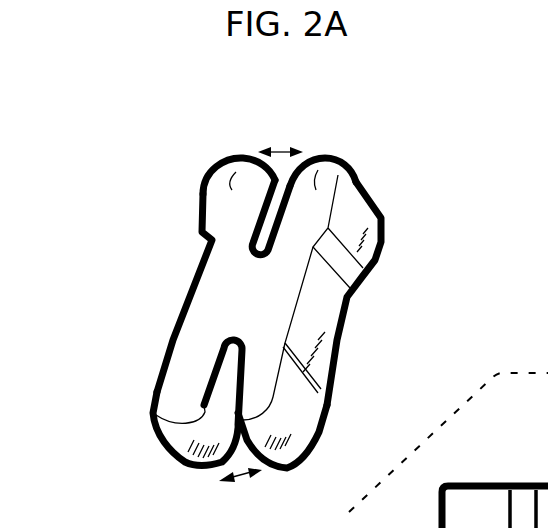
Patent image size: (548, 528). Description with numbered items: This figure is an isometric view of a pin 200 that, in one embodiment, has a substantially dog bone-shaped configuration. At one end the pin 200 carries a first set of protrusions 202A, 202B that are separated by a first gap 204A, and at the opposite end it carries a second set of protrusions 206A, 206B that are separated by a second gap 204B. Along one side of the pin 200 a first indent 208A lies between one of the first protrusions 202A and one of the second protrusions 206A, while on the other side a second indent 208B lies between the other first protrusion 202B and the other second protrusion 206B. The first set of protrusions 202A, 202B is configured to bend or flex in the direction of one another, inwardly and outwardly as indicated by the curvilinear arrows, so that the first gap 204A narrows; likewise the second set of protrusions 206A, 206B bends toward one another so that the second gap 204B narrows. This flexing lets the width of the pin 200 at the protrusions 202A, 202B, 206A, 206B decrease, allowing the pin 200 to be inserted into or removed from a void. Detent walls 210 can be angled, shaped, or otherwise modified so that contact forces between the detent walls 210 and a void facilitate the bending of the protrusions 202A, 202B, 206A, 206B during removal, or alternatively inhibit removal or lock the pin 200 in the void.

The pin 200 is at (373, 205).
The first protrusion 202A is at (224, 160).
The first protrusion 202B is at (325, 157).
The first gap 204A is at (259, 227).
The second gap 204B is at (213, 370).
The second protrusion 206A is at (173, 402).
The second protrusion 206B is at (254, 397).
The first indent 208A is at (170, 284).
The second indent 208B is at (312, 303).
The detent walls 210 is at (338, 252).